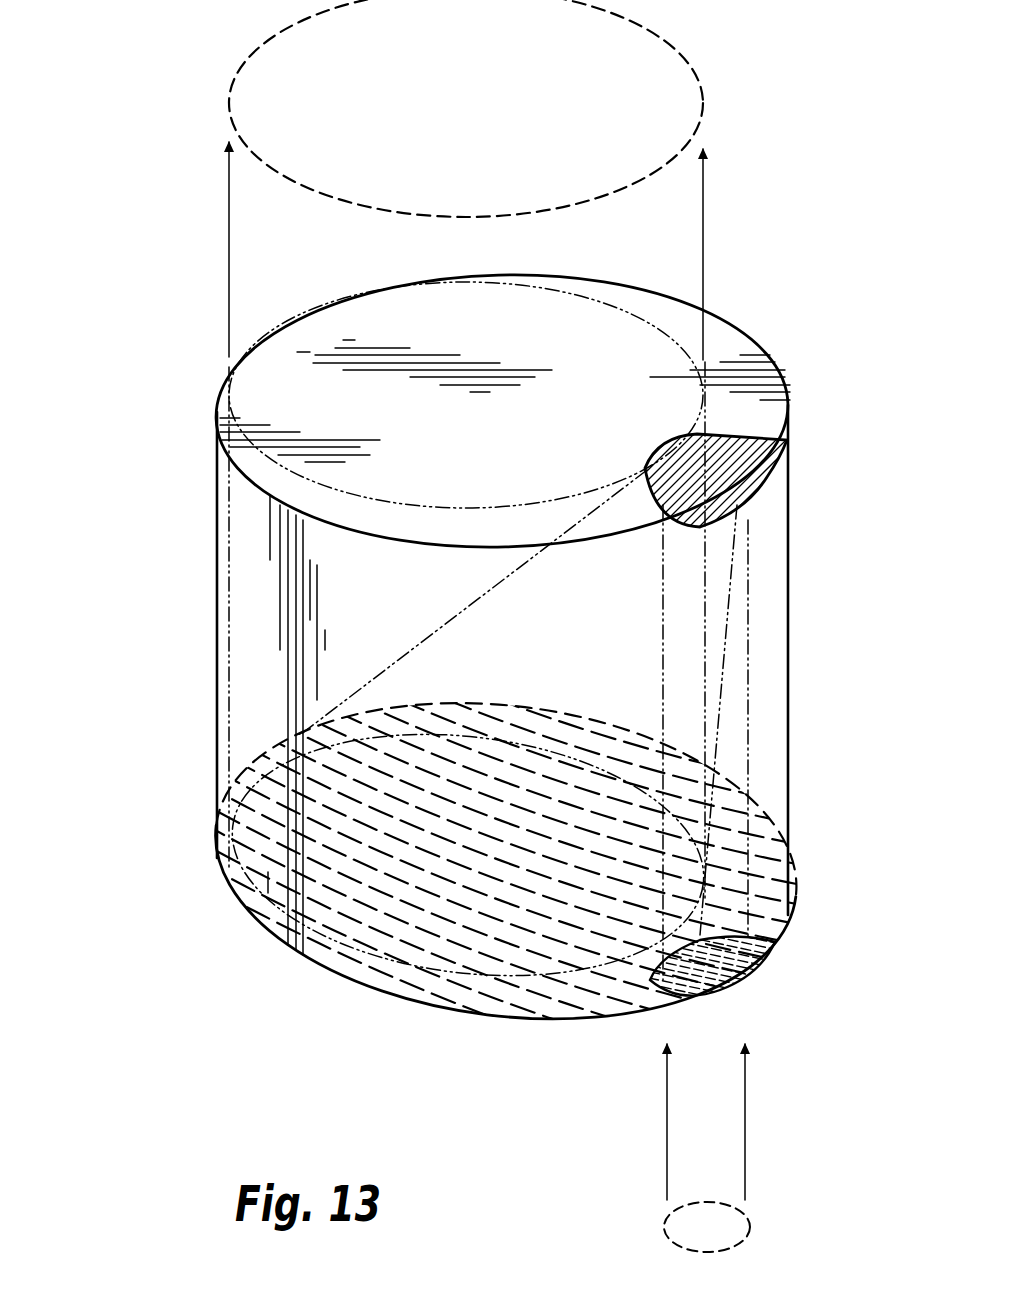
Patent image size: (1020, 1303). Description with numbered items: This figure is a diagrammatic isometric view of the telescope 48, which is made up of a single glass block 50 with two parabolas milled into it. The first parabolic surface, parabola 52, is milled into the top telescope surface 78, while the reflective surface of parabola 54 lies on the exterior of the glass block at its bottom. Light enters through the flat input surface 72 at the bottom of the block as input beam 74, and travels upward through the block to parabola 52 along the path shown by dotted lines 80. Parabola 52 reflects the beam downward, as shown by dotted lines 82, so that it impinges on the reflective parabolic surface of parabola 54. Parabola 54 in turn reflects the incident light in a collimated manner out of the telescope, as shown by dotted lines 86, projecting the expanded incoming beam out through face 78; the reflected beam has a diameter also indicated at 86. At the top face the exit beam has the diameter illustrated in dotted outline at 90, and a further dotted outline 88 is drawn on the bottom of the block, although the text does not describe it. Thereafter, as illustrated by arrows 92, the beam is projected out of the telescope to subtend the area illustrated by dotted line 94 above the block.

The telescope 48 is at (180, 488).
The single glass block 50 is at (210, 668).
The parabola 52 is at (763, 468).
The parabola 54 is at (417, 888).
The flat input surface 72 is at (762, 948).
The input beam 74 is at (750, 1125).
The top telescope surface 78 is at (755, 373).
The dotted lines 80 is at (655, 667).
The dotted lines 82 is at (474, 610).
The dotted lines 86 is at (230, 600).
The bottom footprint 88 is at (540, 975).
The exit beam diameter 90 is at (667, 320).
The arrows 92 is at (237, 276).
The dotted line 94 is at (712, 97).